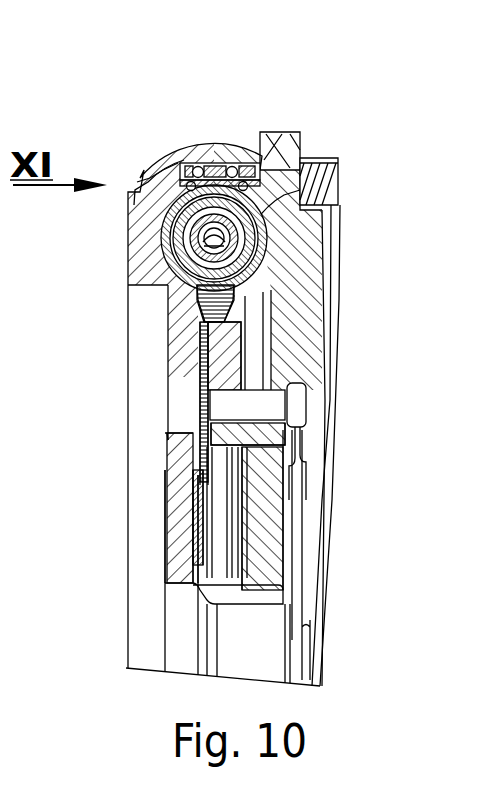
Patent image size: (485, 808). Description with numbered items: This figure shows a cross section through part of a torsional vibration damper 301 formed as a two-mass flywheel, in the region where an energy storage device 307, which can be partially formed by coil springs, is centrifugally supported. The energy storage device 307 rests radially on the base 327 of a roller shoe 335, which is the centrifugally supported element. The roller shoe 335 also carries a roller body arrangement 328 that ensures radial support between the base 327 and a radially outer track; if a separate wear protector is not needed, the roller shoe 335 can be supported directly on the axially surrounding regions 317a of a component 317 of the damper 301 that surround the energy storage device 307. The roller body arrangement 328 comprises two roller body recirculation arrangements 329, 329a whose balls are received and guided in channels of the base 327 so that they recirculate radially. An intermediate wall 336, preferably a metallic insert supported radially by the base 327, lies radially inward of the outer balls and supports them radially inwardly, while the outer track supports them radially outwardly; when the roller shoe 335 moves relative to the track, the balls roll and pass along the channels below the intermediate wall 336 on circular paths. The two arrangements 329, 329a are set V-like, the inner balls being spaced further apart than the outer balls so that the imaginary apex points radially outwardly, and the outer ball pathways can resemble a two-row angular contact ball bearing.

The torsional vibration damper 301 is at (150, 135).
The energy storage device 307 is at (160, 268).
The component 317 is at (184, 350).
The axially surrounding regions 317a is at (197, 160).
The base 327 is at (165, 200).
The roller body arrangement 328 is at (247, 150).
The roller body recirculation arrangement 329 is at (166, 172).
The roller body recirculation arrangement 329a is at (292, 168).
The roller shoe 335 is at (270, 208).
The intermediate wall 336 is at (218, 162).